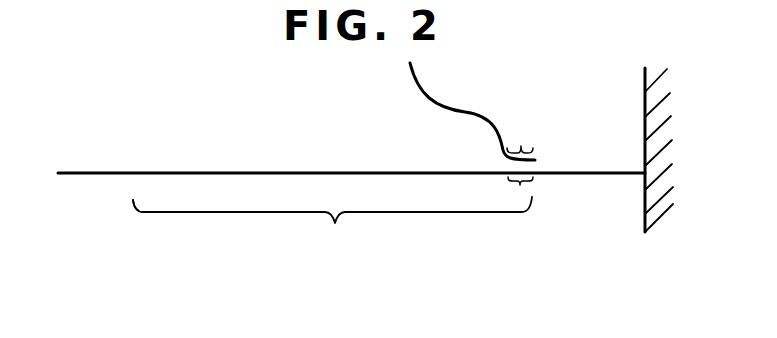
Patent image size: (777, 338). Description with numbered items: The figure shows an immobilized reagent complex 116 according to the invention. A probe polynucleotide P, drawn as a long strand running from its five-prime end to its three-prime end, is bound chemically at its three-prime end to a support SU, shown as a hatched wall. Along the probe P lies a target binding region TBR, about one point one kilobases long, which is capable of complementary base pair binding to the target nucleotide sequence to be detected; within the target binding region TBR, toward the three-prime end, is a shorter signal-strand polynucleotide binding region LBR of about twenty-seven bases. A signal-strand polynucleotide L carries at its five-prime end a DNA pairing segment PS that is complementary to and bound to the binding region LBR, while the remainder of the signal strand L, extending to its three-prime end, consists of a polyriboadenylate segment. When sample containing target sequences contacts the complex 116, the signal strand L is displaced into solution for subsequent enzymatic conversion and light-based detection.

The immobilized reagent complex 116 is at (136, 218).
The probe polynucleotide P is at (213, 170).
The signal-strand polynucleotide L is at (478, 100).
The pairing segment PS is at (523, 138).
The support SU is at (638, 90).
The target binding region TBR is at (332, 234).
The signal-strand polynucleotide binding region LBR is at (520, 186).